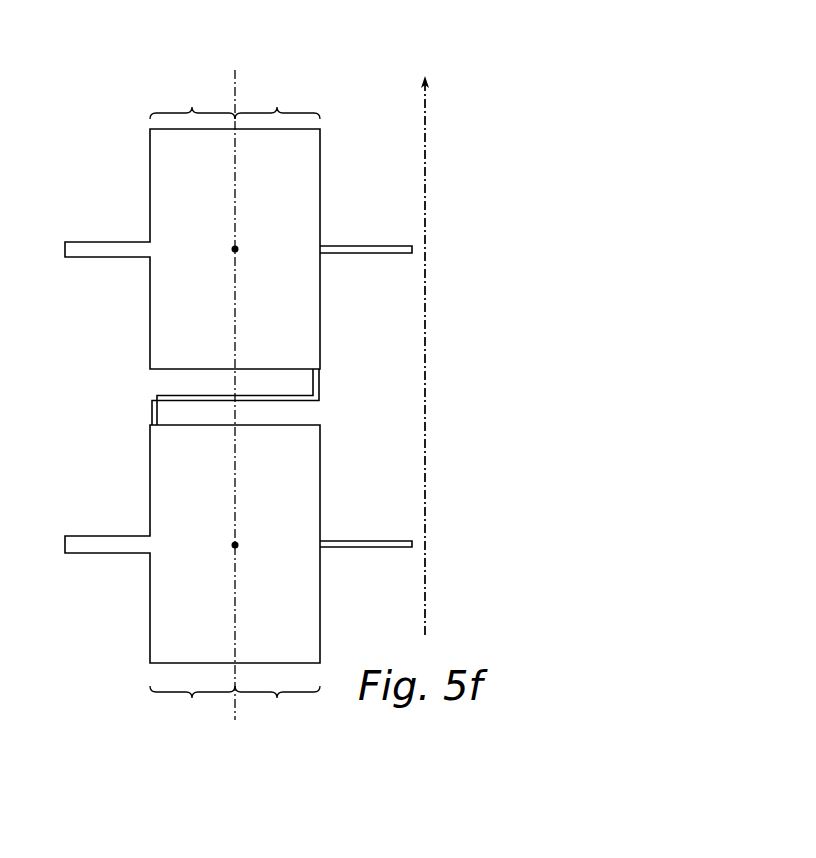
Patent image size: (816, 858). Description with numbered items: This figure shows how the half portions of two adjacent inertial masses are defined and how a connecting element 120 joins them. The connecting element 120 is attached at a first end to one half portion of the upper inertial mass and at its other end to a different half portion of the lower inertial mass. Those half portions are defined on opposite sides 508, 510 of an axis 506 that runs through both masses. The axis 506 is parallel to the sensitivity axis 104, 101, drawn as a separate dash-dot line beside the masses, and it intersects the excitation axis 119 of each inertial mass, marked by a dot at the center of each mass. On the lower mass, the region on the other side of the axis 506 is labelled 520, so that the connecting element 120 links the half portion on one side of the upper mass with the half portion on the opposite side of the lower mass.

The sensitivity axis 101 is at (437, 342).
The sensitivity axis 104 is at (437, 342).
The excitation axis 119 is at (238, 248).
The connecting element 120 is at (202, 398).
The axis 506 is at (237, 83).
The side of axis 508 is at (192, 406).
The side of axis 510 is at (292, 438).
The second portion of lower block 520 is at (277, 710).